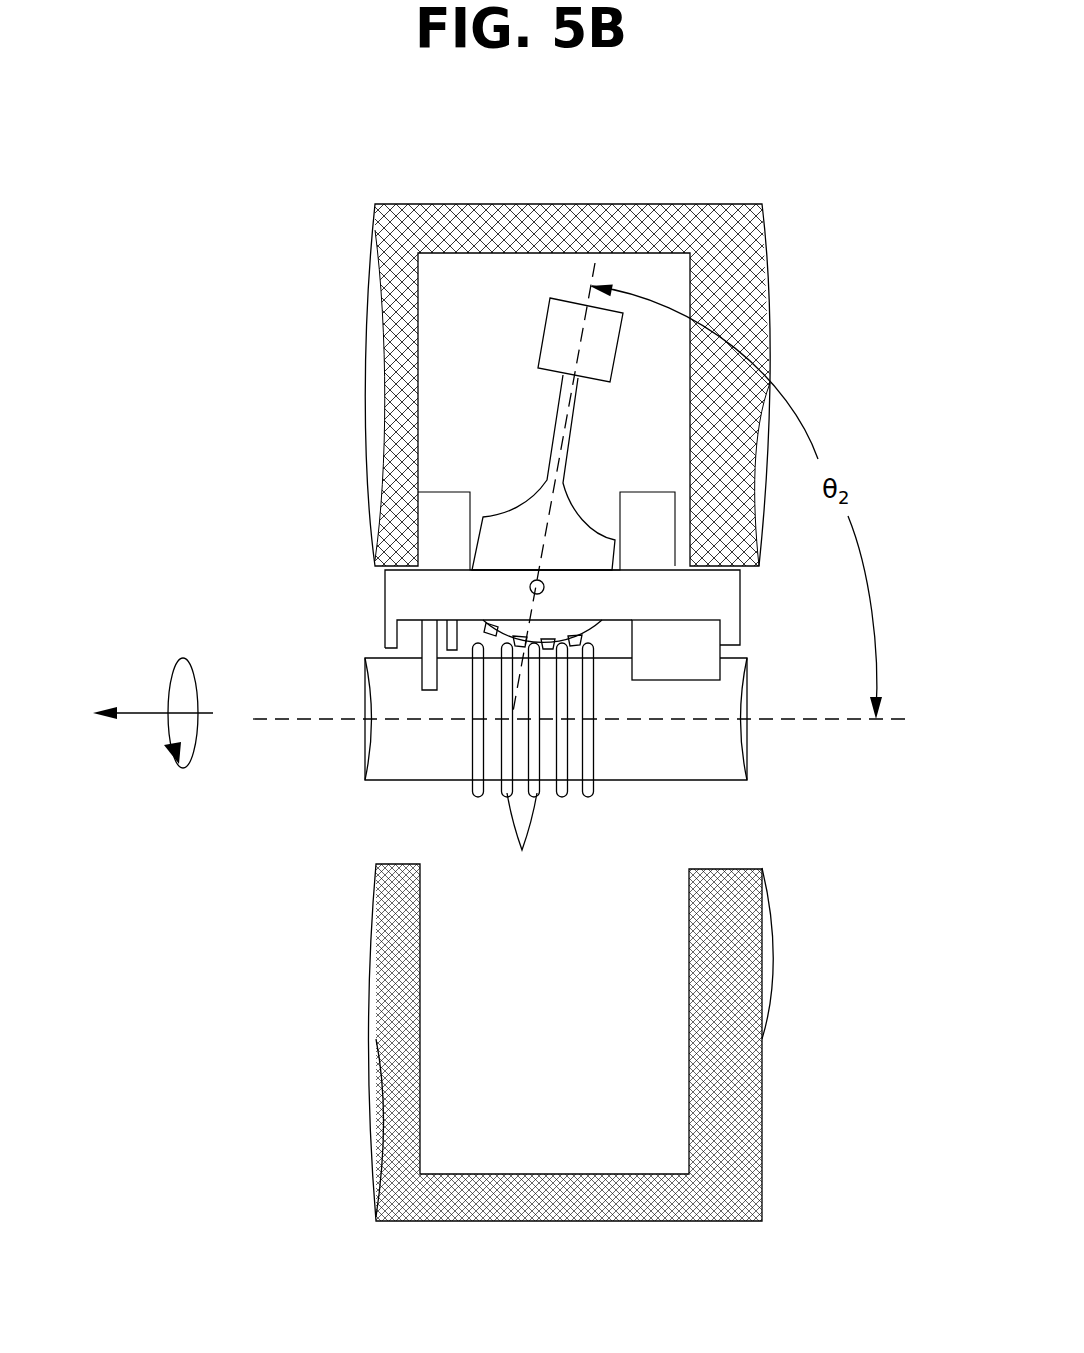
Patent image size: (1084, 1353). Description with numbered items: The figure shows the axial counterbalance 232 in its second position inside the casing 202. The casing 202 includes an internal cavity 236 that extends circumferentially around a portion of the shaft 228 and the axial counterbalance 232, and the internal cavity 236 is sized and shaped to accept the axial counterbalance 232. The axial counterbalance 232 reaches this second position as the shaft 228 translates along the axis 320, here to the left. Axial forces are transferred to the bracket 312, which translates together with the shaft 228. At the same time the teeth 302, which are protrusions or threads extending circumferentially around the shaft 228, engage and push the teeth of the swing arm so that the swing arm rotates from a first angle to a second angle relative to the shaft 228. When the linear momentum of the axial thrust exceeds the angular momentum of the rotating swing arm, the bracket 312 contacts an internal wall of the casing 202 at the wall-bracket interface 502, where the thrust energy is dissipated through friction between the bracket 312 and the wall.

The casing 202 is at (372, 412).
The wall-bracket interface 502 is at (412, 512).
The axial counterbalance 232 is at (352, 590).
The bracket 312 is at (385, 627).
The axis 320 is at (313, 720).
The shaft 228 is at (648, 780).
The teeth 302 is at (522, 839).
The internal cavity 236 is at (567, 1128).